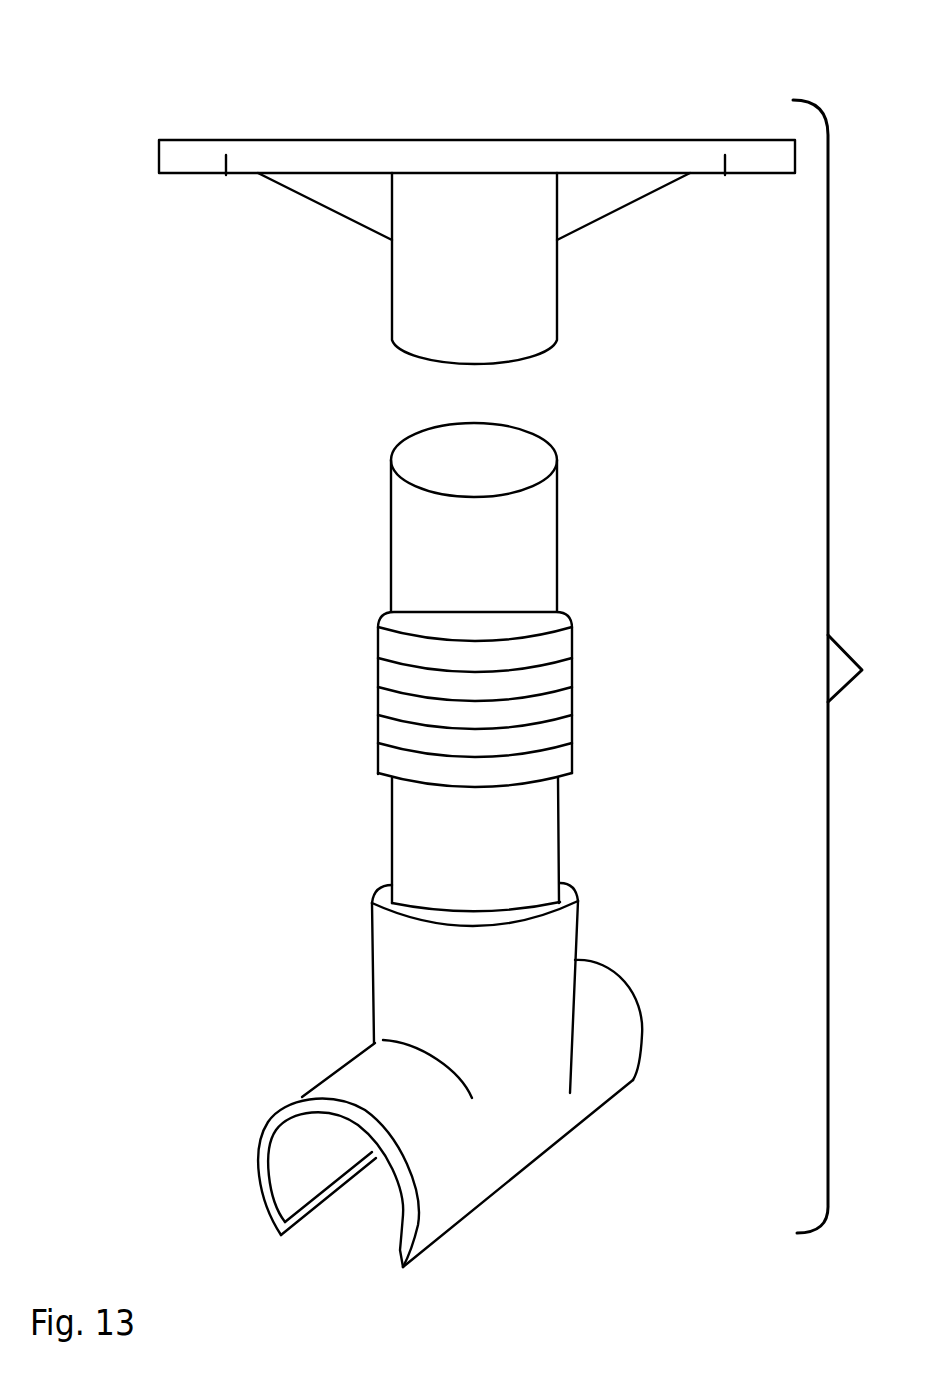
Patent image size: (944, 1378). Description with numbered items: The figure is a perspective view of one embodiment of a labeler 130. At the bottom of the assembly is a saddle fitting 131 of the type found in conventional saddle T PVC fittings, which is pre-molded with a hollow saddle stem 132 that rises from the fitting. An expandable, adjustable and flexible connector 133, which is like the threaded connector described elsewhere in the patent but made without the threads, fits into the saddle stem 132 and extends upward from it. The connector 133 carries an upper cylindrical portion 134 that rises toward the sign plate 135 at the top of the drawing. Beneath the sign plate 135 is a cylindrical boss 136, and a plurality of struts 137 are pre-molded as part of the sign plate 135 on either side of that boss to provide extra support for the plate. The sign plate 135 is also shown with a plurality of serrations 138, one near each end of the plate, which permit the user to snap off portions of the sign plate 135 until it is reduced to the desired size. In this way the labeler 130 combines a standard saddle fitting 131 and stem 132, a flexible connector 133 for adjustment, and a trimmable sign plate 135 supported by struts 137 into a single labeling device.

The labeler 130 is at (192, 743).
The saddle fitting 131 is at (265, 1142).
The saddle stem 132 is at (397, 990).
The connector 133 is at (408, 837).
The cylindrical plug 134 is at (535, 498).
The sign plate 135 is at (632, 138).
The cylindrical boss 136 is at (413, 318).
The struts 137 is at (330, 212).
The serrations 138 is at (226, 175).